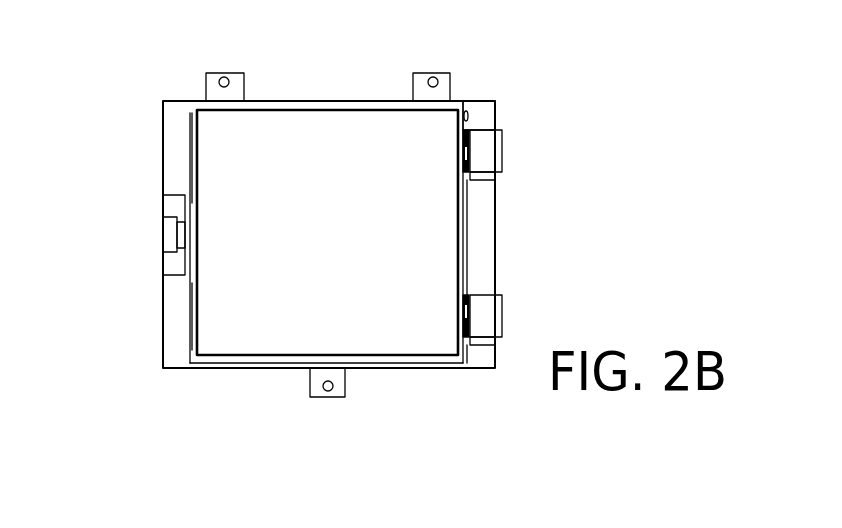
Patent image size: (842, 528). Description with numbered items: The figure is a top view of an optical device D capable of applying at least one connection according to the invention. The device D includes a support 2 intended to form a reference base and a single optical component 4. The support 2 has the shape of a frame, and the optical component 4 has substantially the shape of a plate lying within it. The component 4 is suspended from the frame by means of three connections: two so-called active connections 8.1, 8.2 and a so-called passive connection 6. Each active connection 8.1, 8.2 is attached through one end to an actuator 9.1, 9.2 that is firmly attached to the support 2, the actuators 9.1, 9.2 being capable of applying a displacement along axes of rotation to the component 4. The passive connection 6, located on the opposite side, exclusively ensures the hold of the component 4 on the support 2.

The support 2 is at (477, 91).
The optical component 4 is at (213, 362).
The passive connection 6 is at (188, 233).
The active connection 8.1 is at (462, 148).
The active connection 8.2 is at (460, 311).
The actuator 9.1 is at (486, 154).
The actuator 9.2 is at (486, 321).
The optical device D is at (156, 154).